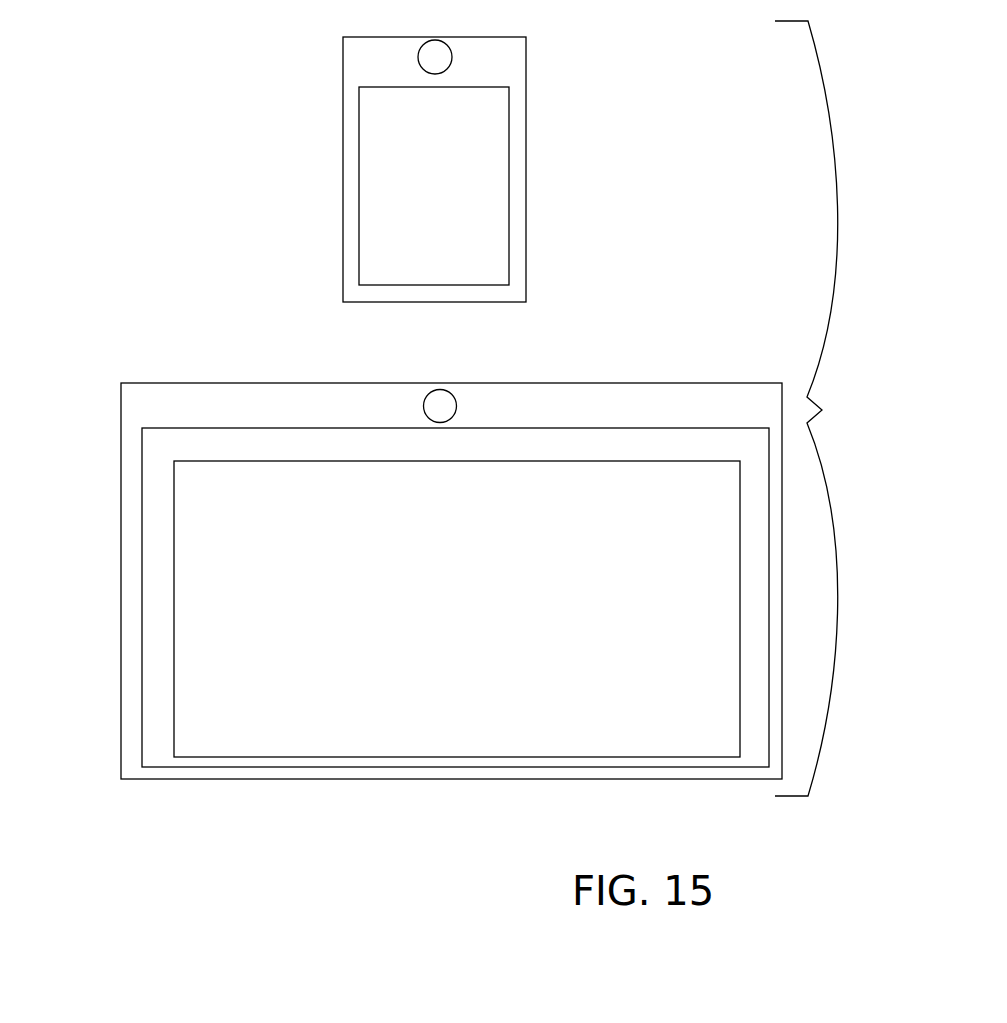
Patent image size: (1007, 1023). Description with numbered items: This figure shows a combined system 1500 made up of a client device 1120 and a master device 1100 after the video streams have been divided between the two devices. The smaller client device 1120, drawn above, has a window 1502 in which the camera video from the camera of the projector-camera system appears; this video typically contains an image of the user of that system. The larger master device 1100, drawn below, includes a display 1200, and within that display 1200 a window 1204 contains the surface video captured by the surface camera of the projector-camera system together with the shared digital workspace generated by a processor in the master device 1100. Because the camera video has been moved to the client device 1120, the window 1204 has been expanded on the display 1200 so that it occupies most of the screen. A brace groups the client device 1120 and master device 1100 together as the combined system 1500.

The client device 1120 is at (527, 117).
The window 1502 is at (505, 234).
The master device 1100 is at (121, 432).
The display 1200 is at (142, 558).
The window 1204 is at (174, 652).
The combined system 1500 is at (829, 408).